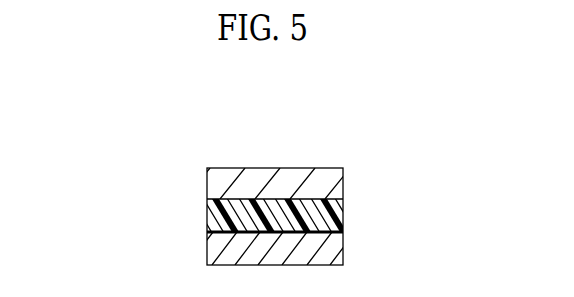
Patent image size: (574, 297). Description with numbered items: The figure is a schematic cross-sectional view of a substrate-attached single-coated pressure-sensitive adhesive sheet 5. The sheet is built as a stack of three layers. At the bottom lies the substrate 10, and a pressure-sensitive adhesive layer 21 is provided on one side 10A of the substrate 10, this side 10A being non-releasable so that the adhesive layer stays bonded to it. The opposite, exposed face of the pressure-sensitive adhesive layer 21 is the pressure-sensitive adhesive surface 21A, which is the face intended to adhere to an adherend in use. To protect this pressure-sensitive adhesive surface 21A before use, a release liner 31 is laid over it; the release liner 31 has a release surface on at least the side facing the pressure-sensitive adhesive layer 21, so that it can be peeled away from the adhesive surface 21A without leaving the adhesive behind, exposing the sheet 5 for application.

The pressure-sensitive adhesive sheet 5 is at (318, 127).
The release liner 31 is at (343, 175).
The pressure-sensitive adhesive layer 21 is at (343, 213).
The substrate 10 is at (343, 245).
The pressure-sensitive adhesive surface 21A is at (232, 199).
The one side of the substrate 10A is at (229, 232).